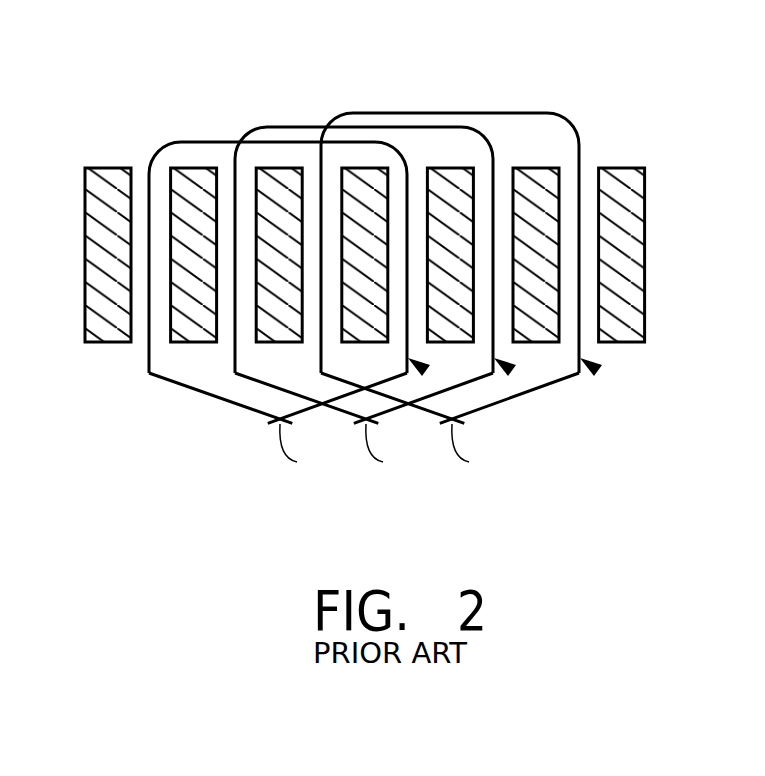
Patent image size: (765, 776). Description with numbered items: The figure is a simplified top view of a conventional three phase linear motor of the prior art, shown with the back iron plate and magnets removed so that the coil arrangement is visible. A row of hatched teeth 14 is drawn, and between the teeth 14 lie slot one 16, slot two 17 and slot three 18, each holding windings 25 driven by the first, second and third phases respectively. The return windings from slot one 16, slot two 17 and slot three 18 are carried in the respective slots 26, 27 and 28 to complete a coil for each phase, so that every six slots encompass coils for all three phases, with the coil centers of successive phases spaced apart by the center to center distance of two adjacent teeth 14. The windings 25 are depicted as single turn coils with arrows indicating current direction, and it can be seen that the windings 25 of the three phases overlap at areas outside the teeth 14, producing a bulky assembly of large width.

The teeth 14 is at (360, 168).
The slot one 16 is at (146, 338).
The slot two 17 is at (227, 338).
The slot three 18 is at (308, 338).
The windings 25 is at (432, 372).
The slot 26 is at (415, 173).
The slot 27 is at (502, 173).
The slot 28 is at (589, 173).